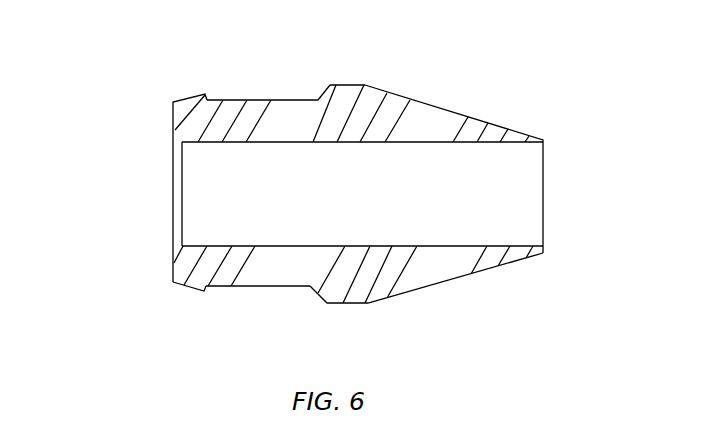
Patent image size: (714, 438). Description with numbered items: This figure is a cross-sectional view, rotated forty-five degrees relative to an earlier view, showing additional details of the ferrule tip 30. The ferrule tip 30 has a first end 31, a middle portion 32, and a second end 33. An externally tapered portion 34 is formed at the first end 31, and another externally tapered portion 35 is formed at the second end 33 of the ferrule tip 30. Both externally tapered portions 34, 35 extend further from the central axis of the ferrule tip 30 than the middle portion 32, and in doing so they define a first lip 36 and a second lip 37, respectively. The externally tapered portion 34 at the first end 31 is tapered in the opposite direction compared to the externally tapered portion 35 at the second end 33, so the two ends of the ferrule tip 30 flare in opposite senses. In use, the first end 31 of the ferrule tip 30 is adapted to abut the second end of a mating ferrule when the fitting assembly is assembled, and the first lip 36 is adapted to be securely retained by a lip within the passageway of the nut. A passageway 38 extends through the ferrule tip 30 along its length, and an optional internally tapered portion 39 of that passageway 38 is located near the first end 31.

The ferrule tip 30 is at (330, 55).
The first end 31 is at (143, 118).
The middle portion 32 is at (275, 90).
The second end 33 is at (552, 135).
The externally tapered portion 34 is at (188, 292).
The externally tapered portion 35 is at (445, 292).
The first lip 36 is at (208, 290).
The second lip 37 is at (320, 300).
The passageway 38 is at (346, 216).
The internally tapered portion 39 is at (177, 138).